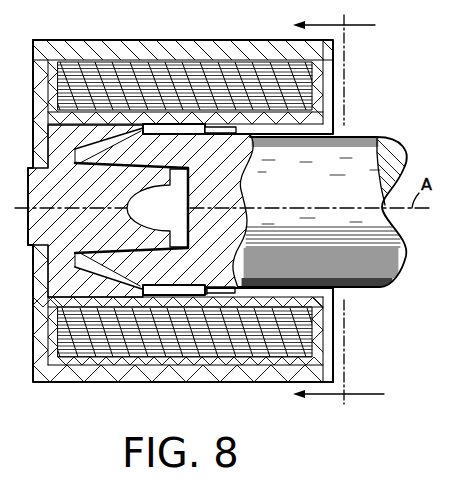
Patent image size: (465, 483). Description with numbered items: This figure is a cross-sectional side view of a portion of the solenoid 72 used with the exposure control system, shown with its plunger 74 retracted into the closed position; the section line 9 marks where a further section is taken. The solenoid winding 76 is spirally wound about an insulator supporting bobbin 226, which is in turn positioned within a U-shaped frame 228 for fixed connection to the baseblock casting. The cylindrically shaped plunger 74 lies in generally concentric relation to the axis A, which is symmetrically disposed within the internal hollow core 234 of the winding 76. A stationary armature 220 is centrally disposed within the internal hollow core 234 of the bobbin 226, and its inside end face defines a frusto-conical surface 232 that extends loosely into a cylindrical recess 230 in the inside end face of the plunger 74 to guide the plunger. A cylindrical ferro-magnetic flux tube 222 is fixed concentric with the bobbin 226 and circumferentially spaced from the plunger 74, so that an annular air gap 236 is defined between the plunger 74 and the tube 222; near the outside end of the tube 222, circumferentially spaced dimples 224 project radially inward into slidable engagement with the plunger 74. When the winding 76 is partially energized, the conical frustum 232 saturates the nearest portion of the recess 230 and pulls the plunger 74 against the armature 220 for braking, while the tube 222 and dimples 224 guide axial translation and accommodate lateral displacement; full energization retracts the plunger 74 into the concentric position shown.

The section line 9- 9 is at (345, 211).
The solenoid 72 is at (50, 386).
The plunger 74 is at (372, 137).
The solenoid winding 76 is at (183, 344).
The stationary armature 220 is at (98, 194).
The ferro-magnetic flux tube 222 is at (340, 290).
The dimples 224 is at (303, 287).
The bobbin 226 is at (333, 358).
The U-shaped frame 228 is at (98, 384).
The cylindrical recess 230 is at (175, 166).
The frusto-conical surface 232 is at (152, 251).
The internal hollow core 234 is at (238, 133).
The annular air gap 236 is at (248, 296).